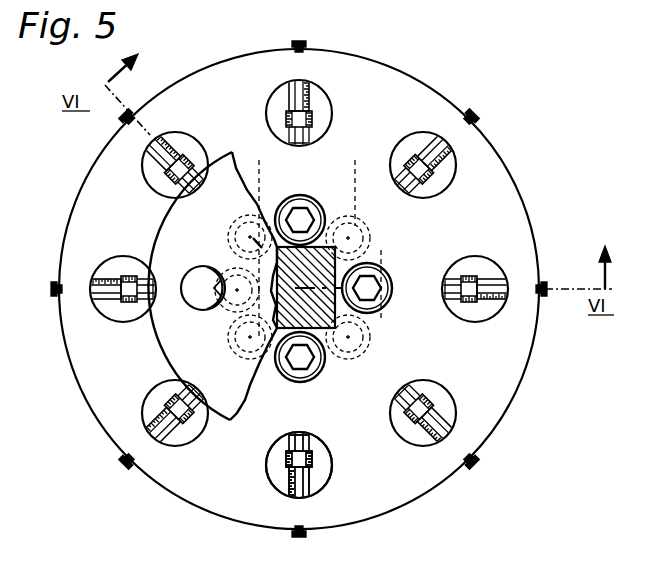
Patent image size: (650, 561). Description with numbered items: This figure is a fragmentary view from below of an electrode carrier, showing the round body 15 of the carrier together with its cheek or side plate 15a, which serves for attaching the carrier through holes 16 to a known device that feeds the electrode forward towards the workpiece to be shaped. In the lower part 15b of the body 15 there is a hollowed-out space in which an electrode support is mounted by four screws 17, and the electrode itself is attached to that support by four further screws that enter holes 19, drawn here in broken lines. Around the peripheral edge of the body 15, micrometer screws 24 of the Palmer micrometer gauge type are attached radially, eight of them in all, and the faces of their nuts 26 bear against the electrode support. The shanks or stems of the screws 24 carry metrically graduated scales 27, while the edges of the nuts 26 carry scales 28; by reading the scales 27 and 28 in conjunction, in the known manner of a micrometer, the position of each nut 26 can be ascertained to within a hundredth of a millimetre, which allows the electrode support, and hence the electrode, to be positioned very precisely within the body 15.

The body 15 is at (310, 350).
The cheek or side plate 15a is at (222, 187).
The lower part of the body 15b is at (237, 63).
The holes 16 is at (192, 282).
The screws 17 is at (372, 280).
The holes 19 is at (392, 347).
The micrometer screws 24 is at (108, 305).
The nuts 26 is at (326, 120).
The metrically graduated scales 27 is at (450, 162).
The scales 28 is at (470, 273).